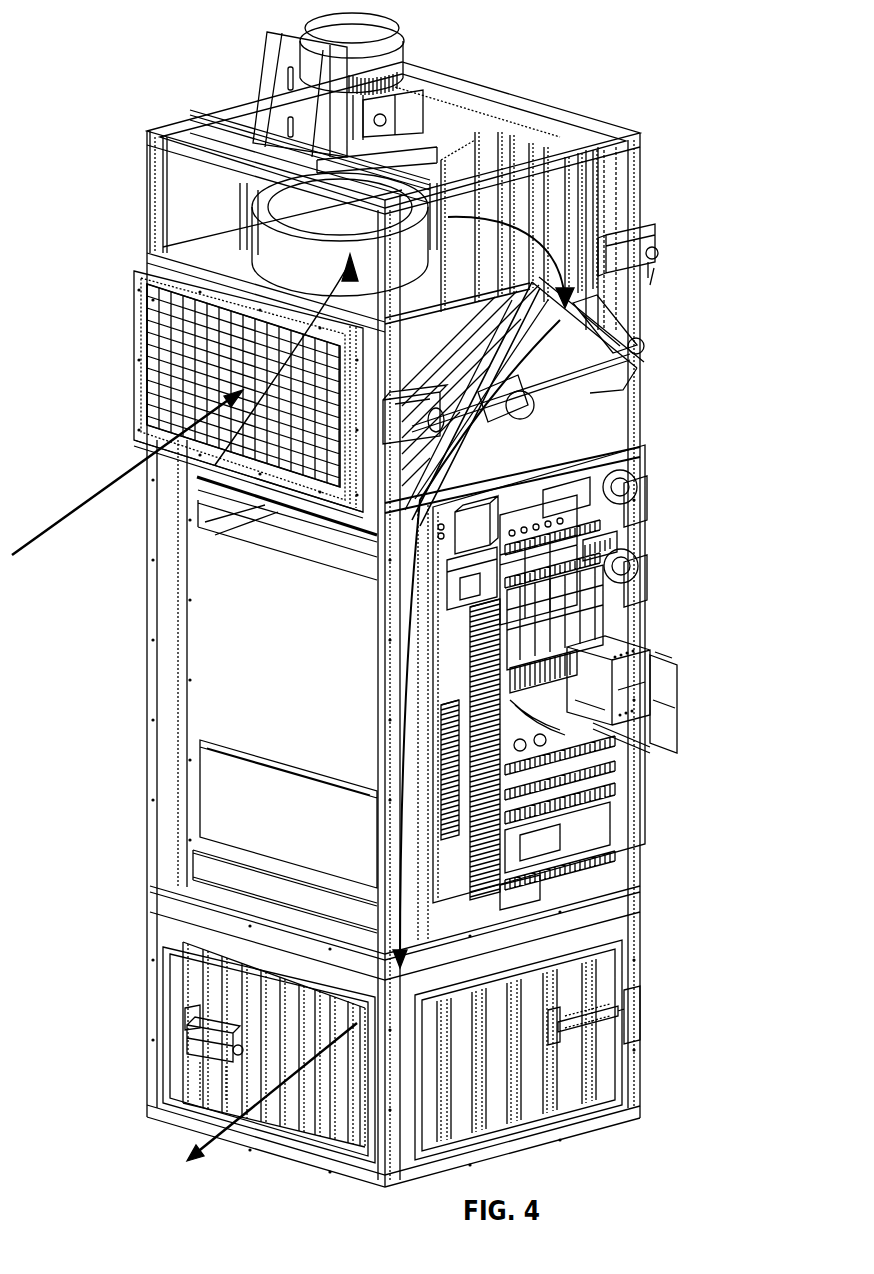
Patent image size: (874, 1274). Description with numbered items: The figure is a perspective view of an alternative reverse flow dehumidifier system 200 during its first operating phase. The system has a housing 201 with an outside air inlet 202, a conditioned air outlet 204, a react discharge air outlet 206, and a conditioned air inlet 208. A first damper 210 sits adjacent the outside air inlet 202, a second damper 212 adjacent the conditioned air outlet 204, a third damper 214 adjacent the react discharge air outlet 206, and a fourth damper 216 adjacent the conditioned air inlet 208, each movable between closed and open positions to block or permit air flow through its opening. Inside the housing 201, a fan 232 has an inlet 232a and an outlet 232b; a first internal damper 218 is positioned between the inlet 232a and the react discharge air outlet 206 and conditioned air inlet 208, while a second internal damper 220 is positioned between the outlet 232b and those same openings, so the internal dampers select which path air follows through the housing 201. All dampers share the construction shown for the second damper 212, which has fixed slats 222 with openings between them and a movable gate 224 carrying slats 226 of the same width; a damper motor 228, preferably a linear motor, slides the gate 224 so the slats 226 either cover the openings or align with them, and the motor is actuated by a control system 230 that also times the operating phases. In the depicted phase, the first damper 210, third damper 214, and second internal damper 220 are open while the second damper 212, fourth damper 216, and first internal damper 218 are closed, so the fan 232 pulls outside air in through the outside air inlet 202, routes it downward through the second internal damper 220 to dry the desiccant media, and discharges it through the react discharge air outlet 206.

The reverse flow dehumidifier system 200 is at (97, 45).
The housing 201 is at (622, 890).
The outside air inlet 202 is at (150, 384).
The conditioned air outlet 204 is at (618, 212).
The react discharge air outlet 206 is at (328, 1108).
The conditioned air inlet 208 is at (593, 1093).
The first damper 210 is at (415, 395).
The second damper 212 is at (603, 297).
The third damper 214 is at (210, 1052).
The fourth damper 216 is at (557, 1020).
The first internal damper 218 is at (407, 387).
The second internal damper 220 is at (583, 380).
The fixed slat 222 is at (568, 202).
The movable gate 224 is at (552, 193).
The slat 226 is at (570, 200).
The damper motor 228 is at (638, 261).
The control system 230 is at (651, 655).
The fan 232 is at (300, 262).
The inlet of fan 232a is at (555, 367).
The outlet of fan 232b is at (446, 208).